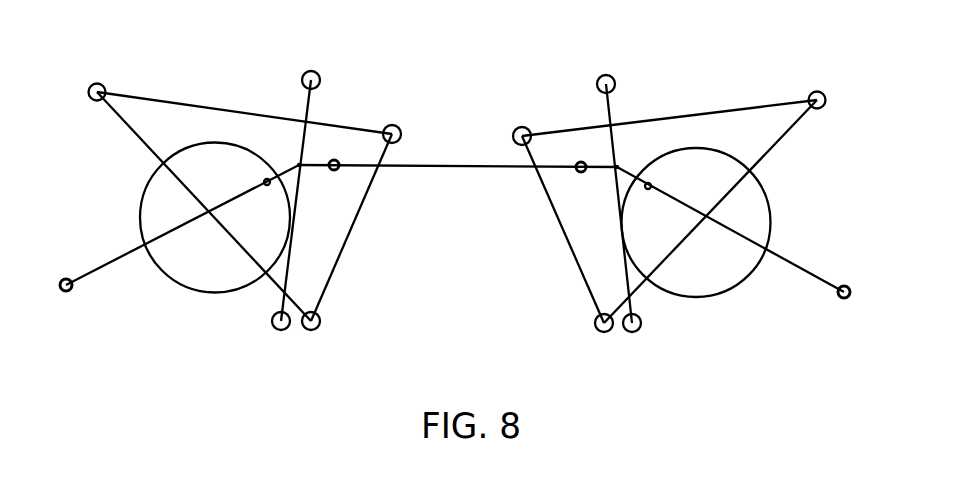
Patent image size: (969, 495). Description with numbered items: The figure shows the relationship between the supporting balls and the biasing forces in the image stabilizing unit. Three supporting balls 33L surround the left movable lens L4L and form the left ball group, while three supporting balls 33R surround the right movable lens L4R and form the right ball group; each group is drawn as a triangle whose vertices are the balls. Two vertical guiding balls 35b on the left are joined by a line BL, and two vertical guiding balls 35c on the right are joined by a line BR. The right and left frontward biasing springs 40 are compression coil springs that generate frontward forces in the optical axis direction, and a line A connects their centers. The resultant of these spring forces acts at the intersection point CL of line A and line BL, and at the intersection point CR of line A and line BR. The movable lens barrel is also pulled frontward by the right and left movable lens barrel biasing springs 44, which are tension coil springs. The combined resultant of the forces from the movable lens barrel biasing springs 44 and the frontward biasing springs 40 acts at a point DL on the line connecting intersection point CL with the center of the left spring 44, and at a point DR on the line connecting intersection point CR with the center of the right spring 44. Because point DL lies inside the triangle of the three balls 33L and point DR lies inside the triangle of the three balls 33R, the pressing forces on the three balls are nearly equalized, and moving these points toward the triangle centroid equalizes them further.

The supporting balls 33L is at (97, 83).
The vertical guiding balls 35b is at (314, 72).
The frontward biasing springs 40 is at (334, 171).
The movable lens barrel biasing springs 44 is at (68, 292).
The line A is at (461, 171).
The line BL is at (296, 260).
The intersection point CL is at (294, 160).
The point DL is at (260, 176).
The left movable lens L4L is at (167, 268).
The supporting balls 33R is at (523, 127).
The vertical guiding balls 35c is at (609, 75).
The line BR is at (614, 227).
The intersection point CR is at (626, 163).
The point DR is at (659, 180).
The right movable lens L4R is at (760, 225).